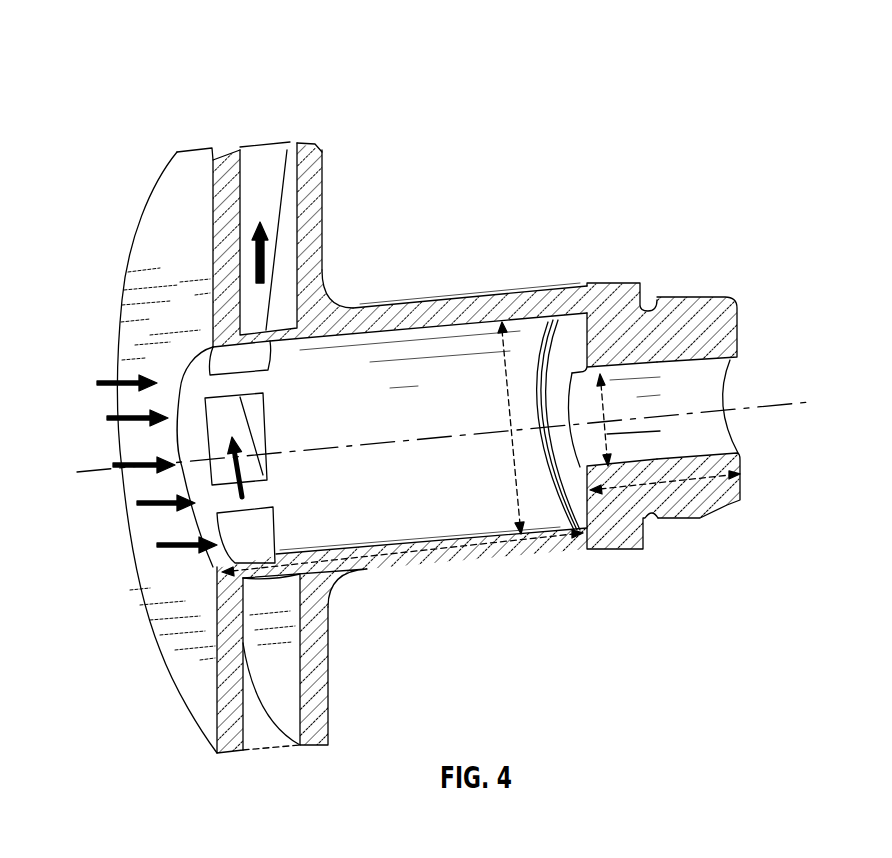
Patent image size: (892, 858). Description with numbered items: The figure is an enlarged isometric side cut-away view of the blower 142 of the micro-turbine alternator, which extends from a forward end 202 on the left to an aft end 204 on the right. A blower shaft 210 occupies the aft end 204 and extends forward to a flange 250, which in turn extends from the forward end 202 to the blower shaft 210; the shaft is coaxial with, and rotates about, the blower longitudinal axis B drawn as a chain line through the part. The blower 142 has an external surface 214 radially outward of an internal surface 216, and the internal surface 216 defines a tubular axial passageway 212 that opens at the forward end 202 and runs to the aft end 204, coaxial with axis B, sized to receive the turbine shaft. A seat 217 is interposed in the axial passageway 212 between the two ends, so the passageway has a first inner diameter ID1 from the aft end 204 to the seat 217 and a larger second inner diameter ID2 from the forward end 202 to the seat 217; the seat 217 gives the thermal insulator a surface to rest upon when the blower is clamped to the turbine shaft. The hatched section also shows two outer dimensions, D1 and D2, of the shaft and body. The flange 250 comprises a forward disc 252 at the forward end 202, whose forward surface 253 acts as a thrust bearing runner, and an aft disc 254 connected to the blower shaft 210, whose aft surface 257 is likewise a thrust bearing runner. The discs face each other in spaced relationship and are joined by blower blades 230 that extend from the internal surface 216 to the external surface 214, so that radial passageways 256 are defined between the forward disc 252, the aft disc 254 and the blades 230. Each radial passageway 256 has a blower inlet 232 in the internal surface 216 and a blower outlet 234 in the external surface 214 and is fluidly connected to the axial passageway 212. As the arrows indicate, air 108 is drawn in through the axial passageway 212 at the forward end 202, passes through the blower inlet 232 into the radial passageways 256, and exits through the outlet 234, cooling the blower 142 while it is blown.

The blower 142 is at (163, 39).
The air 108 is at (176, 546).
The forward end 202 is at (140, 415).
The aft end 204 is at (740, 335).
The blower shaft 210 is at (508, 303).
The axial passageway 212 is at (383, 517).
The external surface 214 is at (390, 308).
The internal surface 216 is at (418, 327).
The seat 217 is at (583, 505).
The blower blades 230 is at (258, 180).
The blower inlet 232 is at (278, 528).
The blower outlet 234 is at (277, 752).
The flange 250 is at (298, 143).
The forward disc 252 is at (215, 195).
The forward surface 253 is at (160, 230).
The aft disc 254 is at (313, 173).
The radial passageway 256 is at (310, 212).
The aft surface 257 is at (317, 257).
The first inner diameter ID1 is at (660, 431).
The second inner diameter ID2 is at (508, 390).
The first outer diameter D1 is at (675, 487).
The second outer diameter D2 is at (443, 550).
The blower longitudinal axis B is at (778, 402).